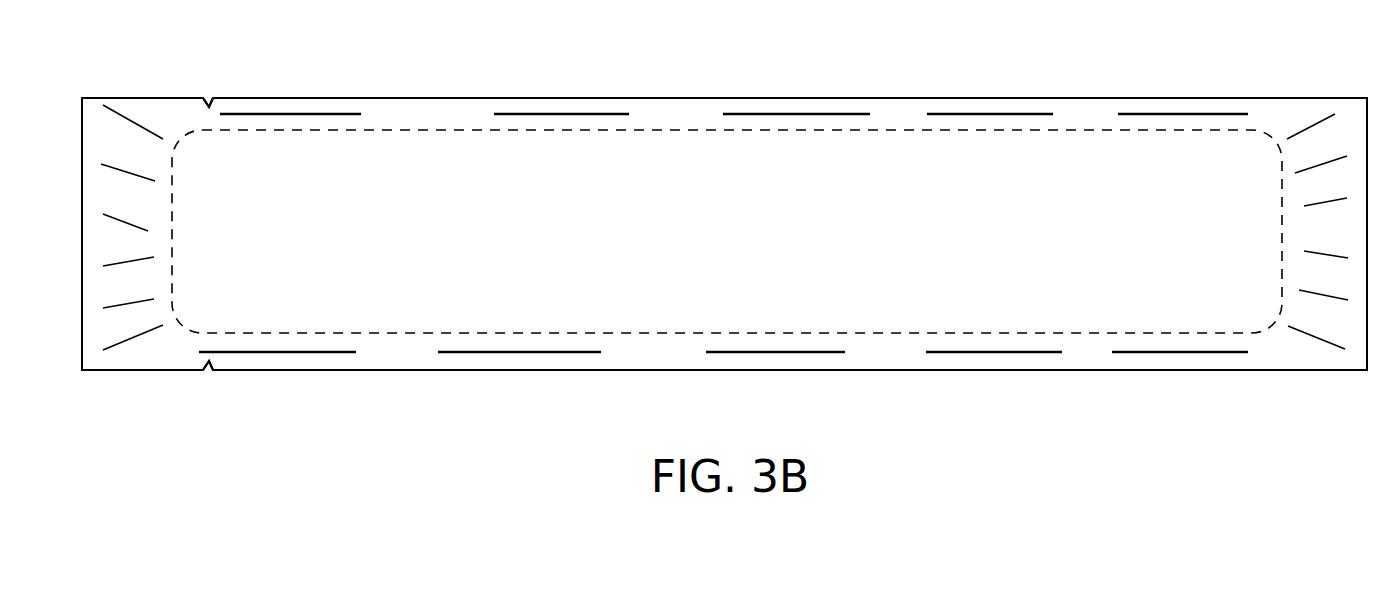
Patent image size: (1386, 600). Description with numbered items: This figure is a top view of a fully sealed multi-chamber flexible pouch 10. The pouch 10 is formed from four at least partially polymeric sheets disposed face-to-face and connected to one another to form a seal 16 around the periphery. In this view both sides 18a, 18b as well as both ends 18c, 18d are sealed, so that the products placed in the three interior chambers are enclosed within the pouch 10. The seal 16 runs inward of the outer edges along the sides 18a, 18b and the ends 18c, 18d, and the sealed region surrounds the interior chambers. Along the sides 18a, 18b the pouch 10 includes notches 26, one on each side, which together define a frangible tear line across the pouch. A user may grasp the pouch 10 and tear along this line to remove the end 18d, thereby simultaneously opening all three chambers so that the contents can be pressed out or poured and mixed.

The multi-chamber flexible pouch 10 is at (263, 404).
The seal 16 is at (974, 114).
The side 18a is at (748, 97).
The side 18b is at (494, 370).
The end 18c is at (1327, 153).
The end 18d is at (110, 155).
The notch 26 is at (213, 98).